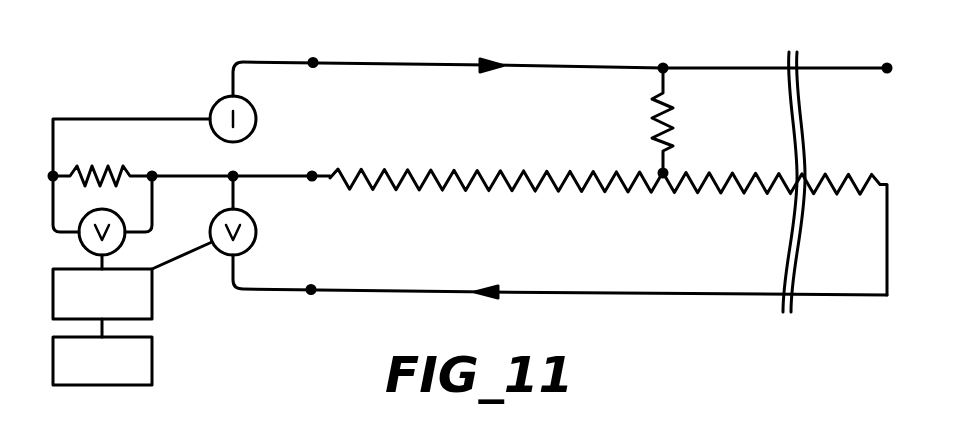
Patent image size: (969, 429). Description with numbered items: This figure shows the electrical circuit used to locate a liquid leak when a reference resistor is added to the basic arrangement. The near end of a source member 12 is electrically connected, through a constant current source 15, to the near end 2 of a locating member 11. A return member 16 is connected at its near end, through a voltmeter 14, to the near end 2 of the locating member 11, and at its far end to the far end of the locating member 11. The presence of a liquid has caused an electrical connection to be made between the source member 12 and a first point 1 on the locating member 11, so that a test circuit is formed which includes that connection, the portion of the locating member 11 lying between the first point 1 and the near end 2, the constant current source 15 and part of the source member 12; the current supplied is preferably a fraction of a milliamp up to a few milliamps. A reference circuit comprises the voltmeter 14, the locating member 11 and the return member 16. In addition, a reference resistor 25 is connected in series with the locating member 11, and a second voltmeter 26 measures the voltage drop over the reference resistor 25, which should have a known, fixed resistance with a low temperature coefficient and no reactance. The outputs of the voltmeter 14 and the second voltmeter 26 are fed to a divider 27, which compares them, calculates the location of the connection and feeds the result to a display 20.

The first point 1 is at (671, 214).
The near end 2 is at (330, 208).
The locating member 11 is at (818, 178).
The source member 12 is at (822, 68).
The voltmeter 14 is at (256, 232).
The constant current source 15 is at (257, 115).
The return member 16 is at (820, 294).
The display 20 is at (117, 373).
The reference resistor 25 is at (126, 165).
The second voltmeter 26 is at (117, 250).
The divider 27 is at (116, 305).